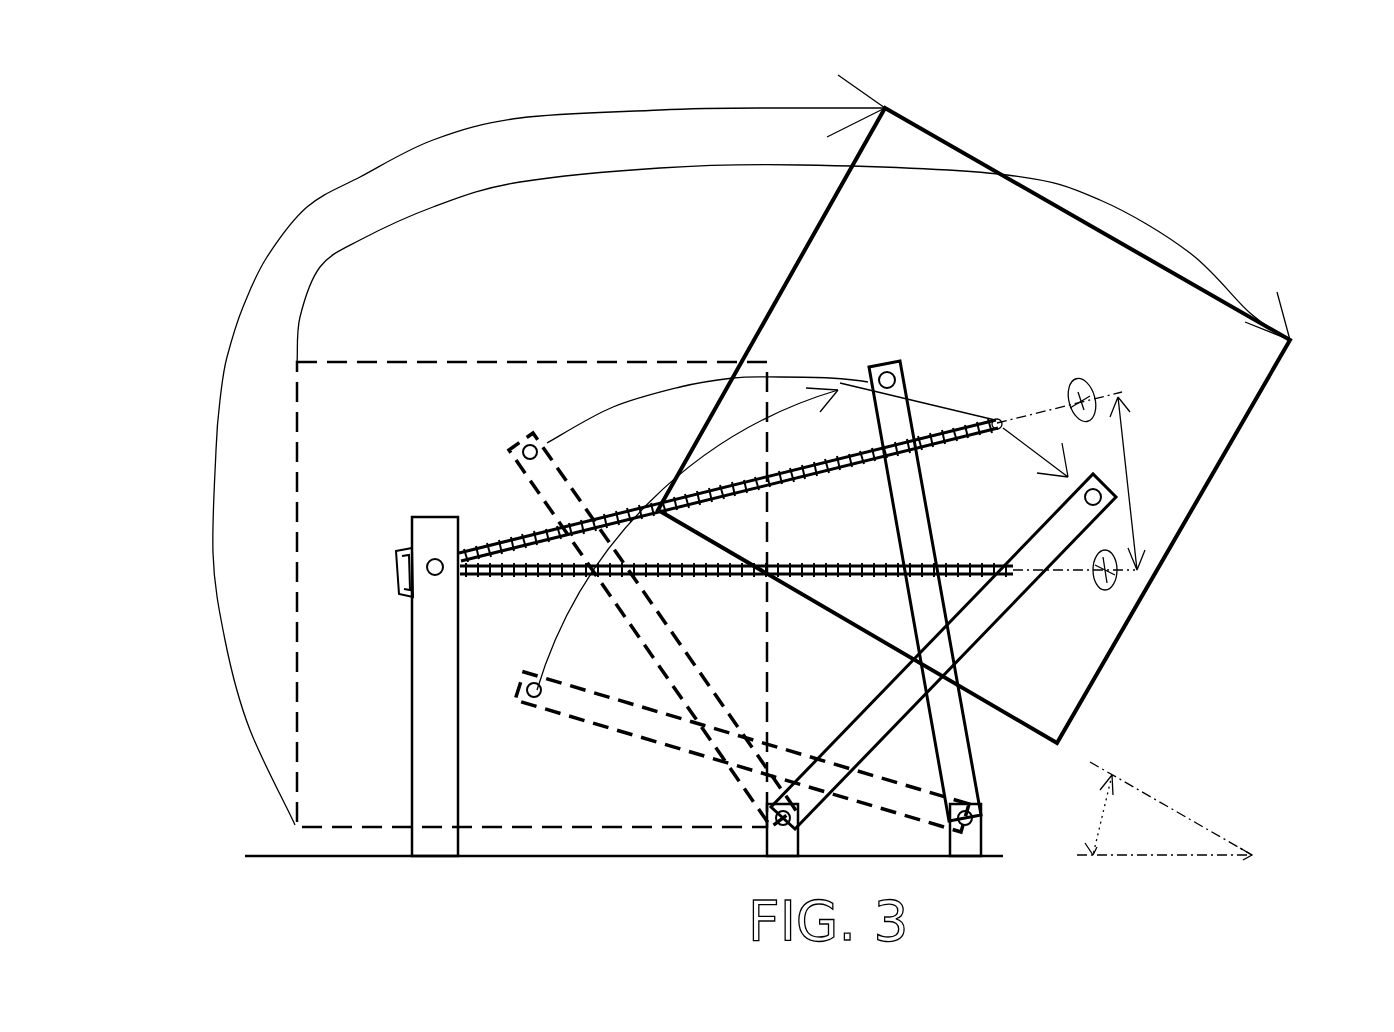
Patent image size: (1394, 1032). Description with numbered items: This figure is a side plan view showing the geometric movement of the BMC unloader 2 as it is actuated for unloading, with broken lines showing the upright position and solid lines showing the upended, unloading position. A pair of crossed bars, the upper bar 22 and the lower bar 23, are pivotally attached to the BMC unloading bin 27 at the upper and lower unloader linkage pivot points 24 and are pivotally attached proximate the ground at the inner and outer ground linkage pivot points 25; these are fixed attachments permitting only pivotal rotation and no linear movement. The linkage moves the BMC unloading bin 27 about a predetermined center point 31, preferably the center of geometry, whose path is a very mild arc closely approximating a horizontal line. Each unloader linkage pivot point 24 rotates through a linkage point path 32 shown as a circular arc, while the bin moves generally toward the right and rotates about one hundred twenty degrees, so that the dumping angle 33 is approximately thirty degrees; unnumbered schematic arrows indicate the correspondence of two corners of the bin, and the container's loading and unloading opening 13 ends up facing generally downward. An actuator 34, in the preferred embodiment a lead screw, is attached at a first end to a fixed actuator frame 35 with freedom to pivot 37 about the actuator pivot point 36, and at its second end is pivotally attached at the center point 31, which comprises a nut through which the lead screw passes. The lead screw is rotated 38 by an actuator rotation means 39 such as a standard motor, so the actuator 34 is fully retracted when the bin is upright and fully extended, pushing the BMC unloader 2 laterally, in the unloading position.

The BMC unloader 2 is at (328, 475).
The loading and unloading opening 13 is at (433, 362).
The upper bar 22 is at (998, 593).
The lower bar 23 is at (925, 590).
The unloader linkage pivot point 24 is at (541, 690).
The ground linkage pivot point 25 is at (972, 817).
The BMC unloading bin 27 is at (902, 293).
The center point 31 is at (987, 420).
The linkage point path 32 is at (700, 382).
The dumping angle 33 is at (1100, 812).
The actuator 34 is at (555, 535).
The actuator frame 35 is at (432, 665).
The actuator pivot point 36 is at (430, 563).
The pivot 37 is at (1140, 470).
The rotation 38 is at (1120, 580).
The actuator rotation means 39 is at (397, 572).